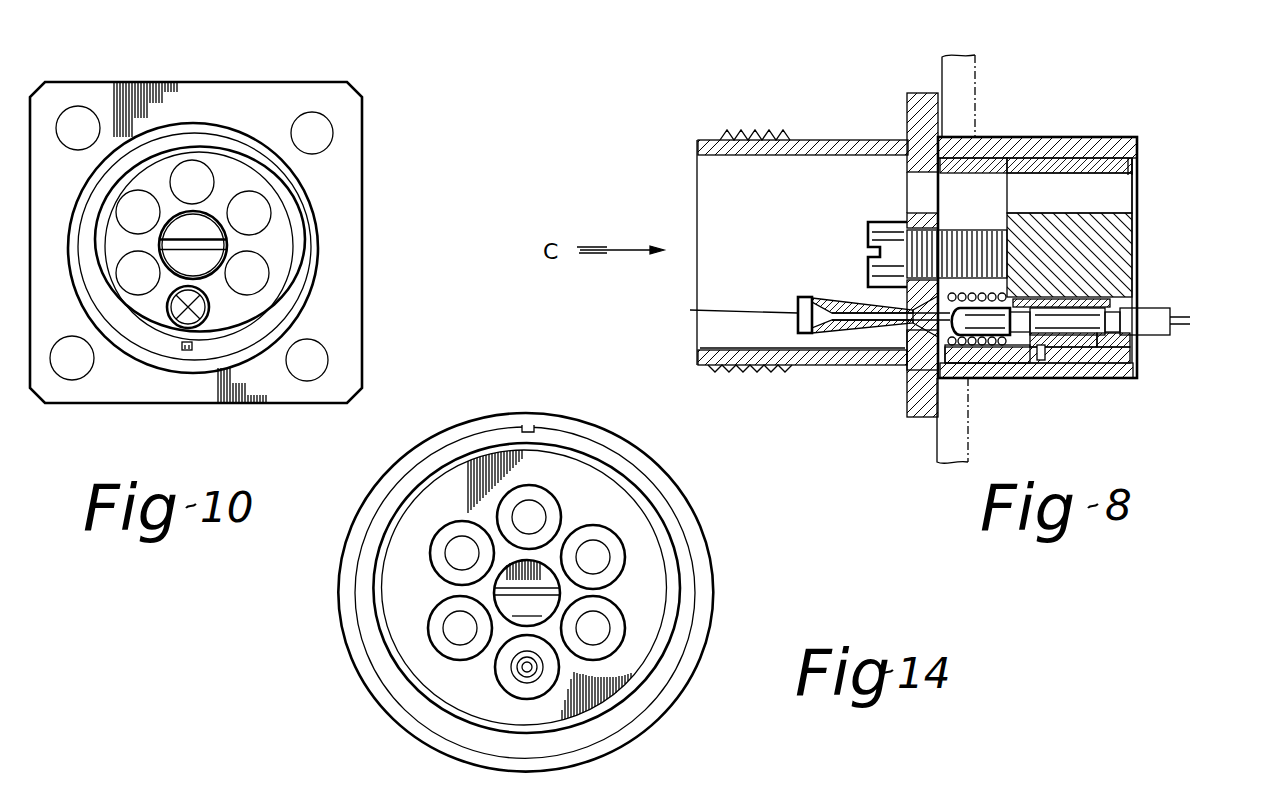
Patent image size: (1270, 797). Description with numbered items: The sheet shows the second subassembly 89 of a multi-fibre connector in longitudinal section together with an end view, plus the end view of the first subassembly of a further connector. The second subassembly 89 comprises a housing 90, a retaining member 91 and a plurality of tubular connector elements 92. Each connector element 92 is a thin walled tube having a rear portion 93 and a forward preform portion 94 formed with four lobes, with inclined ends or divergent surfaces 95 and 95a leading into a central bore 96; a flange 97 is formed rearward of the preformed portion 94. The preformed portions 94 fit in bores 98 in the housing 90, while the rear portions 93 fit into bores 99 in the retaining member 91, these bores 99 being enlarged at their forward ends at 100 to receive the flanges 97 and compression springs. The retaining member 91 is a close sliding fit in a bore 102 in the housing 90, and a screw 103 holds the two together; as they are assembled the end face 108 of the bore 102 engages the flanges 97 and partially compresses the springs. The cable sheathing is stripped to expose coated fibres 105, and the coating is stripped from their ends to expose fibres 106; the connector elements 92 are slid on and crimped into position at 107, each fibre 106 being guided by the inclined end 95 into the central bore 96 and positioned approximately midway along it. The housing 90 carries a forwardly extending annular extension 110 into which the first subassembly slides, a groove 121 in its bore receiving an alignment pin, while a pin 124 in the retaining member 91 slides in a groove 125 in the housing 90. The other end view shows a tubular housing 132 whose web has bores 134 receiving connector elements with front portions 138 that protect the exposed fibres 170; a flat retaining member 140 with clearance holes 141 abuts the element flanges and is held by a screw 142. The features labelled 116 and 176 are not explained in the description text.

In FIG. 8, the second subassembly 89 is at (860, 102).
In FIG. 8, the housing 90 is at (1045, 146).
In FIG. 8, the retaining member 91 is at (1133, 165).
In FIG. 10, the tubular connector element 92 is at (207, 312).
In FIG. 8, the tubular connector element 92 is at (1008, 342).
In FIG. 8, the rear portion 93 is at (1100, 338).
In FIG. 8, the forward preform portion 94 is at (860, 318).
In FIG. 10, the inclined end 95 is at (167, 310).
In FIG. 8, the inclined end 95 is at (927, 326).
In FIG. 8, the divergent surface 95a is at (726, 310).
In FIG. 10, the central bore 96 is at (180, 322).
In FIG. 8, the central bore 96 is at (835, 330).
In FIG. 8, the flange 97 is at (927, 362).
In FIG. 10, the bore 98 is at (264, 210).
In FIG. 8, the bore 98 is at (905, 180).
In FIG. 8, the bore 99 is at (1117, 180).
In FIG. 8, the enlarged forward end 100 is at (983, 348).
In FIG. 8, the bore 102 is at (1094, 159).
In FIG. 10, the screw 103 is at (207, 252).
In FIG. 8, the screw 103 is at (868, 237).
In FIG. 8, the coated fibre 105 is at (1167, 314).
In FIG. 8, the fibre 106 is at (933, 342).
In FIG. 8, the crimp 107 is at (1007, 344).
In FIG. 8, the end face 108 is at (978, 162).
In FIG. 8, the annular extension 110 is at (815, 150).
In FIG. 8, the ferrule end cap 116 is at (797, 333).
In FIG. 10, the groove 121 is at (187, 352).
In FIG. 8, the groove 121 is at (710, 358).
In FIG. 8, the pin 124 is at (1040, 360).
In FIG. 8, the groove 125 is at (1082, 360).
In FIG. 14, the housing 132 is at (706, 638).
In FIG. 14, the bore 134 is at (453, 618).
In FIG. 14, the front portion 138 is at (547, 673).
In FIG. 14, the retaining member 140 is at (617, 498).
In FIG. 14, the hole 141 is at (610, 610).
In FIG. 14, the screw 142 is at (527, 593).
In FIG. 14, the fibre 170 is at (517, 670).
In FIG. 14, the keyway notch 176 is at (530, 424).